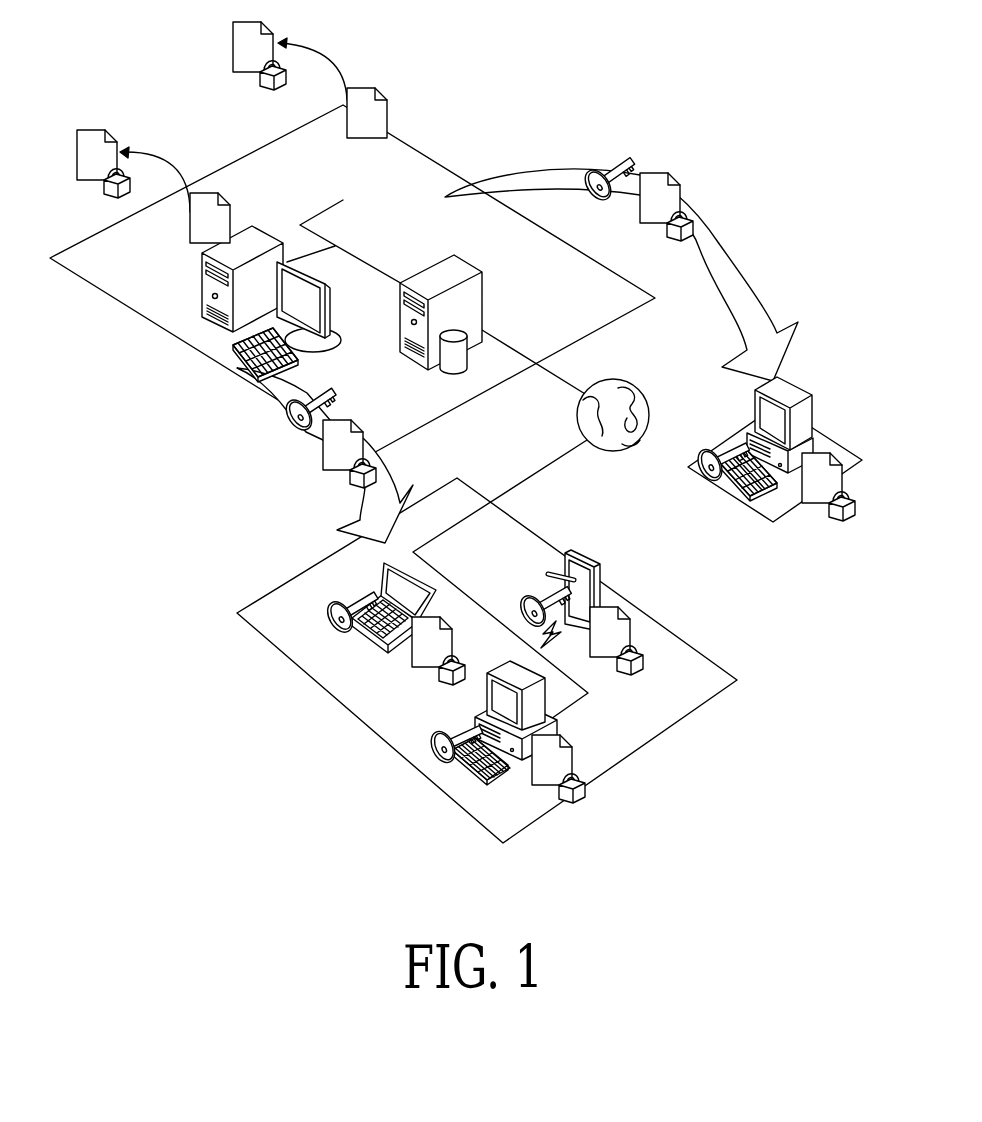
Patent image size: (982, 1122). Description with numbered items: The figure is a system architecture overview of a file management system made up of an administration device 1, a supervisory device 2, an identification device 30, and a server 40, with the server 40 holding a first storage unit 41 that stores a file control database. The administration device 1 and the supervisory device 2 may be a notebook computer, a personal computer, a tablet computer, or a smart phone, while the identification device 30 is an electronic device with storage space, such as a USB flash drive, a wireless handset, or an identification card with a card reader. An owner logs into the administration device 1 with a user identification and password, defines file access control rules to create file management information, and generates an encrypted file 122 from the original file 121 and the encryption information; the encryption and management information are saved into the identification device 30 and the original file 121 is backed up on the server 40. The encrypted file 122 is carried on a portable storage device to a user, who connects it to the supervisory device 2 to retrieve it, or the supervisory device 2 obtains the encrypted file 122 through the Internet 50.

The administration device 1 is at (217, 322).
The supervisory device 2 is at (793, 398).
The identification device 30 is at (603, 170).
The server 40 is at (443, 307).
The first storage unit 41 is at (455, 368).
The Internet 50 is at (620, 440).
The original file 121 is at (375, 118).
The encrypted file 122 is at (247, 40).